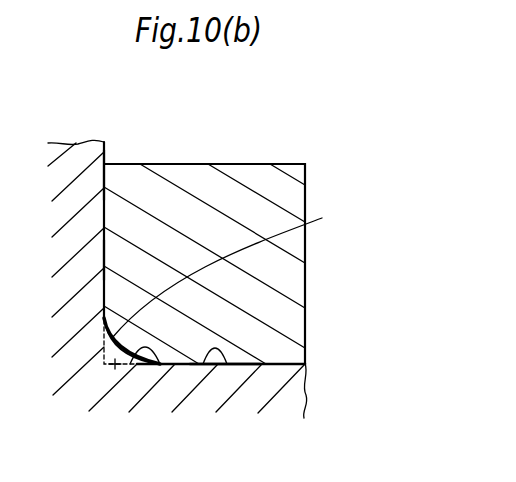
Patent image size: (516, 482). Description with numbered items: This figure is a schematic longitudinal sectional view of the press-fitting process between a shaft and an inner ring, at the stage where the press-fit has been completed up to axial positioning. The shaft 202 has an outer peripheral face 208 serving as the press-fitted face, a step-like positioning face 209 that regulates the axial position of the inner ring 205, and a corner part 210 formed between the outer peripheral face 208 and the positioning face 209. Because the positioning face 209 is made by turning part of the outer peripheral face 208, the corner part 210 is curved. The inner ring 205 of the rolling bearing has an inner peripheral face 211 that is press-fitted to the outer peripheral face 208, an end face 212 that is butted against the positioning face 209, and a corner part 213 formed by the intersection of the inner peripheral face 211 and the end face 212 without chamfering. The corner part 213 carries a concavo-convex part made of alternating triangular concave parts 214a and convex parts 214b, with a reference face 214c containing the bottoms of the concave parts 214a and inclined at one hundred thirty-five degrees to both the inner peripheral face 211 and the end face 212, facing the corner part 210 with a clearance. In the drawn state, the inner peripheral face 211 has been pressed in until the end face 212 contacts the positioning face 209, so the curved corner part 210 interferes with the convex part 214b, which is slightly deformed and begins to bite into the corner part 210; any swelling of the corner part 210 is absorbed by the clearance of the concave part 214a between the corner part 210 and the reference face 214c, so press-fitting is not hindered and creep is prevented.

The shaft 202 is at (75, 157).
The inner ring 205 is at (293, 283).
The outer peripheral face 208 is at (225, 367).
The positioning face 209 is at (105, 198).
The corner part 210 is at (158, 367).
The inner peripheral face 211 is at (277, 367).
The end face 212 is at (103, 258).
The corner part 213 is at (98, 370).
The concave part 214a is at (237, 263).
The convex part 214b is at (115, 370).
The reference face 214c is at (101, 346).